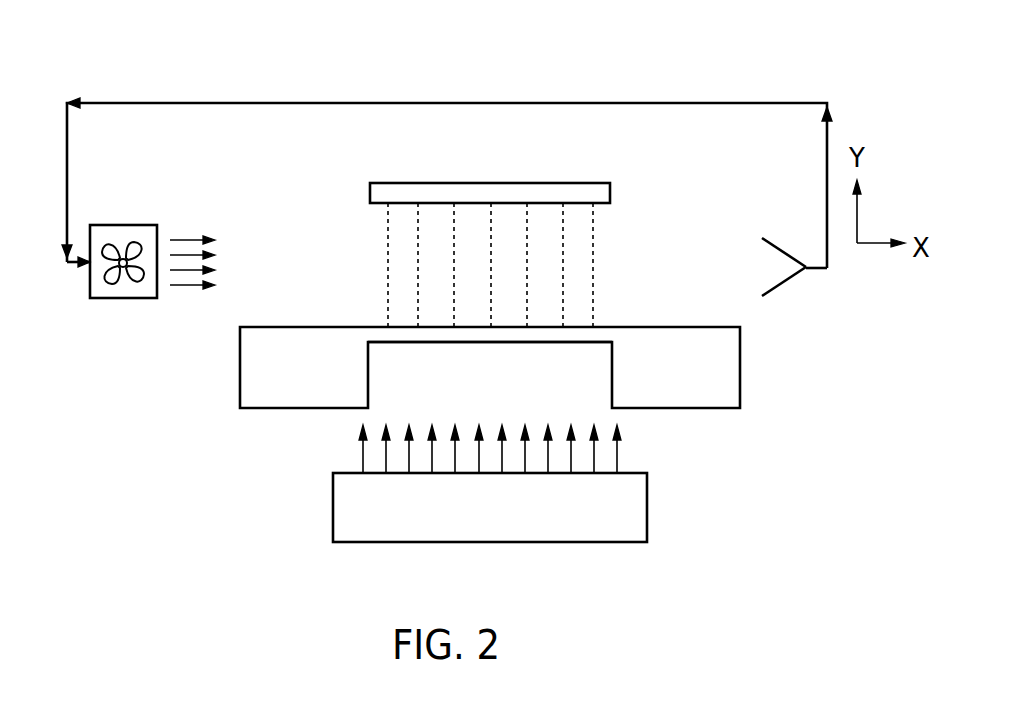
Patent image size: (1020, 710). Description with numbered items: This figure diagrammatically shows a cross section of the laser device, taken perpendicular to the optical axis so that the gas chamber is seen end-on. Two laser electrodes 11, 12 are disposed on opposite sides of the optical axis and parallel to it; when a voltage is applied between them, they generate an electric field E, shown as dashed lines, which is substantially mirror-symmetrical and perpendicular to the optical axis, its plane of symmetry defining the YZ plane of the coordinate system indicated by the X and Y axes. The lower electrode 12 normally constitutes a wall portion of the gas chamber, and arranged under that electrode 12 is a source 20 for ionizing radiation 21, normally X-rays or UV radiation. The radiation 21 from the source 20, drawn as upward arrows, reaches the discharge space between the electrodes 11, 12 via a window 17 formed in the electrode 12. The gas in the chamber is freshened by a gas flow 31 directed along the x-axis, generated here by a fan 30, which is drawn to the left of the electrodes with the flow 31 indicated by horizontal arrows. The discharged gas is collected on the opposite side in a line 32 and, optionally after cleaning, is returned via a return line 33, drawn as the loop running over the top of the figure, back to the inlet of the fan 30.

The laser electrode 11 is at (595, 185).
The laser electrode 12 is at (740, 362).
The window 17 is at (473, 380).
The source for ionizing radiation 20 is at (647, 515).
The ionizing radiation 21 is at (617, 452).
The fan 30 is at (113, 298).
The gas flow 31 is at (185, 285).
The line 32 is at (785, 284).
The return line 33 is at (240, 103).
The electric field E is at (593, 268).